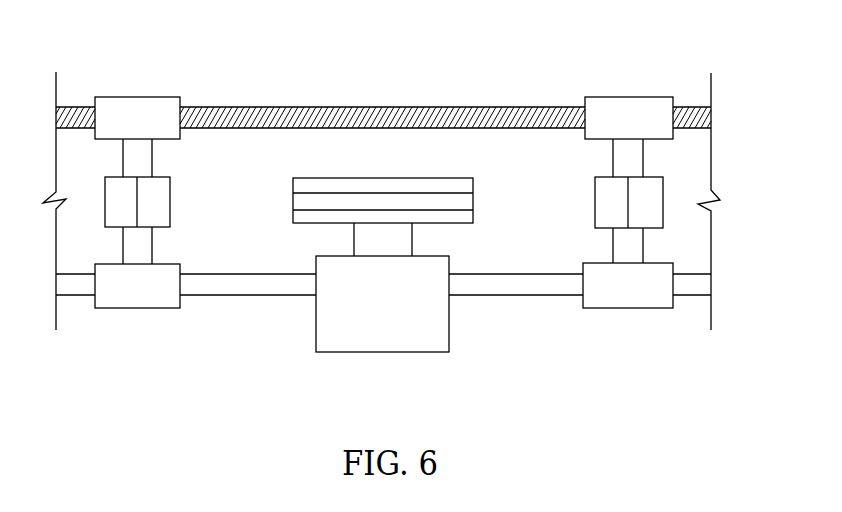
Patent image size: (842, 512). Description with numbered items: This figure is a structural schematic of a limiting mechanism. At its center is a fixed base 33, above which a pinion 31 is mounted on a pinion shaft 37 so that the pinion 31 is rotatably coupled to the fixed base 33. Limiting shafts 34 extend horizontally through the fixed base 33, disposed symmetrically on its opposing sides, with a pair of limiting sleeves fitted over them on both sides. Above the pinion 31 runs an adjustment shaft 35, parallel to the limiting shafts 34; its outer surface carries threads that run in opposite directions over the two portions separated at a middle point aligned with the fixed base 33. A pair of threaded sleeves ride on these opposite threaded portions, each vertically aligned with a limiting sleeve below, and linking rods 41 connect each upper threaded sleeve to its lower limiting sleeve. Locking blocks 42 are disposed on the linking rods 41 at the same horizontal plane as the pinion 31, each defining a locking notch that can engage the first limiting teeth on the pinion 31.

The pinion 31 is at (323, 202).
The fixed base 33 is at (412, 305).
The limiting shafts 34 is at (538, 288).
The adjustment shaft 35 is at (262, 108).
The pinion shaft 37 is at (372, 233).
The linking rods 41 is at (628, 163).
The locking blocks 42 is at (607, 198).